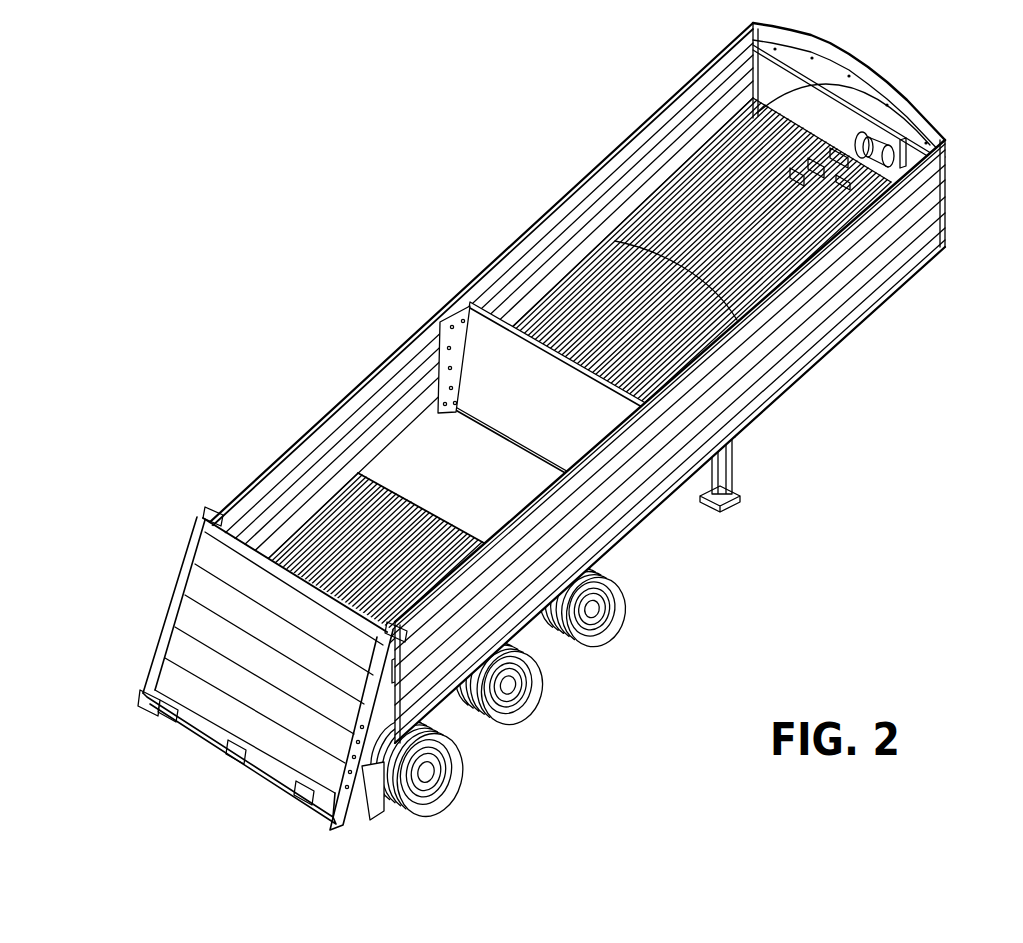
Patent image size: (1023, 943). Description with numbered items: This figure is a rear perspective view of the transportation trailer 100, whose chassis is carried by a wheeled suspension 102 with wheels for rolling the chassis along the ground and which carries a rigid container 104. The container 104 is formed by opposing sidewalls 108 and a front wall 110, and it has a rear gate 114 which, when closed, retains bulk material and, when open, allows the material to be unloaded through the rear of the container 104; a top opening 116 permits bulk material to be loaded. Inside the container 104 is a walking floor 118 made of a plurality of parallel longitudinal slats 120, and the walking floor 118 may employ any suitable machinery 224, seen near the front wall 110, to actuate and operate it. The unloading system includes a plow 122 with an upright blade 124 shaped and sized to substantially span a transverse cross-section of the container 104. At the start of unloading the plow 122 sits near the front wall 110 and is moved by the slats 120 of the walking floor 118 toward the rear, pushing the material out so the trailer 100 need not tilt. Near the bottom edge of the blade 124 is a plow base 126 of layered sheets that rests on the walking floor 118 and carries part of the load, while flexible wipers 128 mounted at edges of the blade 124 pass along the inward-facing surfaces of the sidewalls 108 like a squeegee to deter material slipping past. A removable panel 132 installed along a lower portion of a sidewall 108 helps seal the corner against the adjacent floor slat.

The transportation trailer 100 is at (560, 427).
The wheeled suspension 102 is at (564, 681).
The rigid container 104 is at (588, 153).
The sidewalls 108 is at (572, 218).
The front wall 110 is at (797, 107).
The rear gate 114 is at (193, 620).
The top opening 116 is at (708, 176).
The walking floor 118 is at (550, 379).
The longitudinal slats 120 is at (680, 276).
The plow 122 is at (592, 411).
The upright blade 124 is at (613, 473).
The plow base 126 is at (447, 357).
The wipers 128 is at (438, 462).
The removable panel 132 is at (720, 135).
The machinery 224 is at (905, 128).